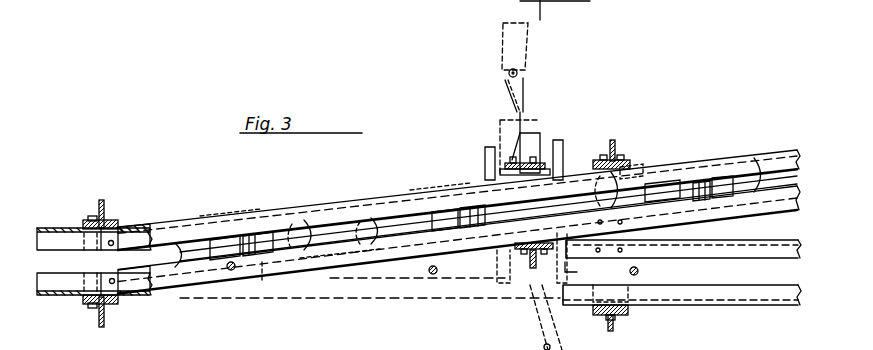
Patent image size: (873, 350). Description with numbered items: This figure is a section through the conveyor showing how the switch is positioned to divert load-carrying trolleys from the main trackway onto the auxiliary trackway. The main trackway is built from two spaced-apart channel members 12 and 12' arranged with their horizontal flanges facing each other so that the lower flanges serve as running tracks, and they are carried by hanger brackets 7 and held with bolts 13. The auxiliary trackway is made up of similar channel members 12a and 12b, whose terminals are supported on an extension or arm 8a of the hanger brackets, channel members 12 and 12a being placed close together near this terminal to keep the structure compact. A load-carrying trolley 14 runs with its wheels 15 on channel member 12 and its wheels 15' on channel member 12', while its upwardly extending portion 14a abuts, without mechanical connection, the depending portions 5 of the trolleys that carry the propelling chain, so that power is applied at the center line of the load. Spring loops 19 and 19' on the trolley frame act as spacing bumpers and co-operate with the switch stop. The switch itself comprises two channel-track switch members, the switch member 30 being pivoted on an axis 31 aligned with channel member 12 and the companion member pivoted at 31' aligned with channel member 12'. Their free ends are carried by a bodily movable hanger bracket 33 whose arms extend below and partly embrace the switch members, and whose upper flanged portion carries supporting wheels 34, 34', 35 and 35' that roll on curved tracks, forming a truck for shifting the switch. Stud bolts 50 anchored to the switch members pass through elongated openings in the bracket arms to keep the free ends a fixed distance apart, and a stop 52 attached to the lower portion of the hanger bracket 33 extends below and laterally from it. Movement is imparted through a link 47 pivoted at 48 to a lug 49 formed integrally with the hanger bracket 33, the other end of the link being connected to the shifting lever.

The depending portions 5 is at (236, 308).
The hanger bracket 7 is at (102, 200).
The extension or arm 8a is at (614, 146).
The channel member 12 is at (419, 221).
The channel member 12' is at (414, 303).
The channel member 12a is at (790, 190).
The channel member 12b is at (770, 152).
The bolt 13 is at (97, 312).
The load-carrying trolley 14 is at (218, 242).
The upwardly extending portion 14a is at (243, 235).
The wheel 15 is at (476, 211).
The wheel 15' is at (273, 295).
The spring loop 19 is at (444, 215).
The spring loop 19' is at (333, 207).
The switch member 30 is at (362, 198).
The pivot axis 31 is at (139, 218).
The pivot 31' is at (136, 301).
The hanger bracket 33 is at (534, 262).
The supporting wheel 34 is at (586, 141).
The supporting wheel 34' is at (586, 258).
The supporting wheel 35 is at (472, 146).
The supporting wheel 35' is at (478, 285).
The link 47 is at (522, 46).
The pivot 48 is at (520, 74).
The lug 49 is at (512, 92).
The stud bolt 50 is at (520, 145).
The stop 52 is at (528, 162).